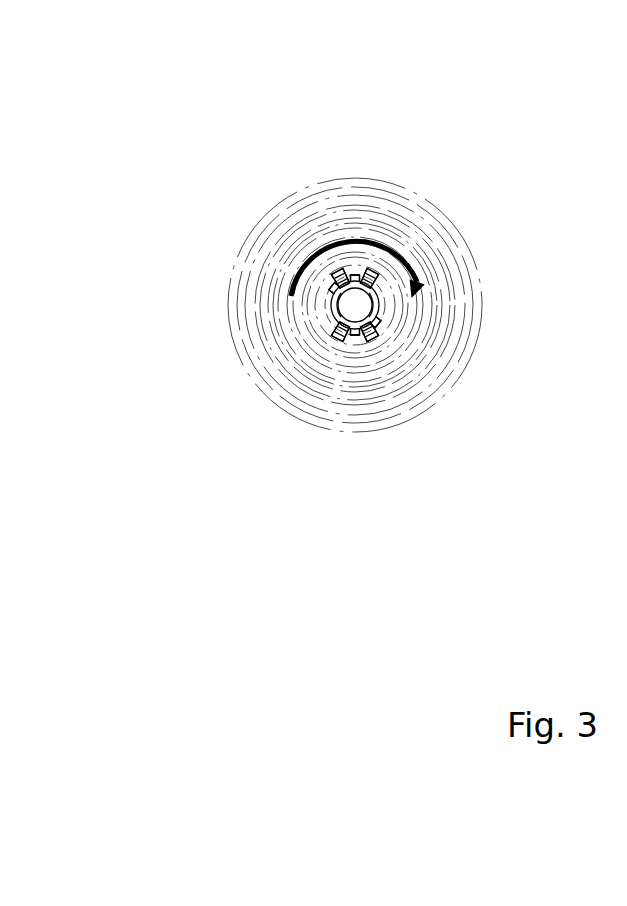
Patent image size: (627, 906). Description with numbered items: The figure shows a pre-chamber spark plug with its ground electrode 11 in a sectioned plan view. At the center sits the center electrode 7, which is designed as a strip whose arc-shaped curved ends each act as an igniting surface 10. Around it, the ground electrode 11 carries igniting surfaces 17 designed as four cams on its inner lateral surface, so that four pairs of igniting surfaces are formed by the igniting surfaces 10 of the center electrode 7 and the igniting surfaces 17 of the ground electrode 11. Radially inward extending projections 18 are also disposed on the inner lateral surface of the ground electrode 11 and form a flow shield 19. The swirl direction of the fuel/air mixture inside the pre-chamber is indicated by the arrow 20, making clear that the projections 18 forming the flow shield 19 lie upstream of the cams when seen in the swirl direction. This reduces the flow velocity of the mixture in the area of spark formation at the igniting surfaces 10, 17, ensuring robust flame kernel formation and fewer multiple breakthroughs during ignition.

The center electrode 7 is at (348, 303).
The igniting surface 10 is at (337, 273).
The ground electrode 11 is at (308, 330).
The igniting surface 17 is at (370, 312).
The projection 18 is at (356, 278).
The flow shield 19 is at (374, 311).
The arrow 20 is at (397, 257).